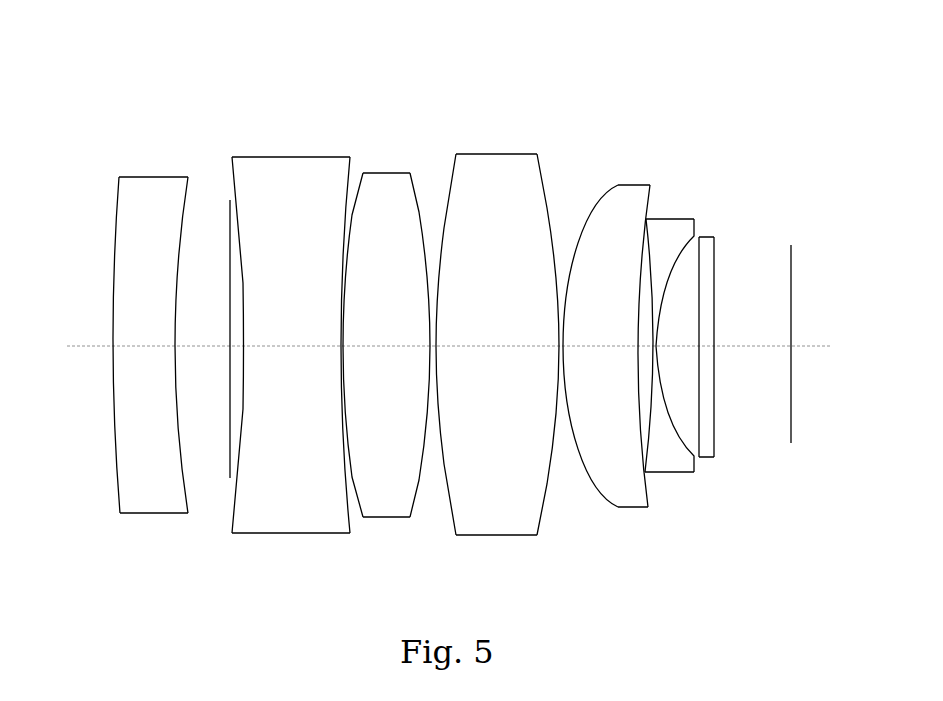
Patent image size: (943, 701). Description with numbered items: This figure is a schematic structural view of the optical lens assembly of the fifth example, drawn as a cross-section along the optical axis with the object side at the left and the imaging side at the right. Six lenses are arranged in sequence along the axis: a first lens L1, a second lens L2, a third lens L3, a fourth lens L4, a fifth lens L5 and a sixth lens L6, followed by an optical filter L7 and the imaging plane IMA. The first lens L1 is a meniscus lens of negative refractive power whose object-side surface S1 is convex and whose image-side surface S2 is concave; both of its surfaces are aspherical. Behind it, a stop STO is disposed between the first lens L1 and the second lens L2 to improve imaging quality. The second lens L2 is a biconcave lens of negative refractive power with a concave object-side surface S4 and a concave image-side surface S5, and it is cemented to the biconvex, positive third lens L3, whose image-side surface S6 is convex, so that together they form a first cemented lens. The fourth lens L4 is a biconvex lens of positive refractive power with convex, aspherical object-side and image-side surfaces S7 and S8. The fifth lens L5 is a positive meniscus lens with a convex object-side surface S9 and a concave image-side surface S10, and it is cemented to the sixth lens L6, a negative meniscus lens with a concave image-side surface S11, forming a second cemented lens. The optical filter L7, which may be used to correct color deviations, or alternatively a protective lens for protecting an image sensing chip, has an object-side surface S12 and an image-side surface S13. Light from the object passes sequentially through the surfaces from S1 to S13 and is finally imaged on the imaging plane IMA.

The object-side surface of the first lens S1 is at (118, 218).
The image-side surface of the first lens S2 is at (182, 227).
The stop STO is at (228, 233).
The object-side surface of the second lens S4 is at (243, 283).
The image-side surface of the second lens S5 is at (351, 217).
The image-side surface of the third lens S6 is at (418, 212).
The object-side surface of the fourth lens S7 is at (445, 217).
The image-side surface of the fourth lens S8 is at (546, 217).
The object-side surface of the fifth lens S9 is at (585, 233).
The image-side surface of the fifth lens S10 is at (649, 190).
The image-side surface of the sixth lens S11 is at (662, 287).
The object-side surface of the optical filter S12 is at (700, 263).
The image-side surface of the optical filter S13 is at (715, 283).
The first lens L1 is at (110, 307).
The second lens L2 is at (313, 307).
The third lens L3 is at (400, 307).
The fourth lens L4 is at (512, 307).
The fifth lens L5 is at (626, 307).
The sixth lens L6 is at (691, 307).
The optical filter L7 is at (763, 307).
The imaging plane IMA is at (790, 443).